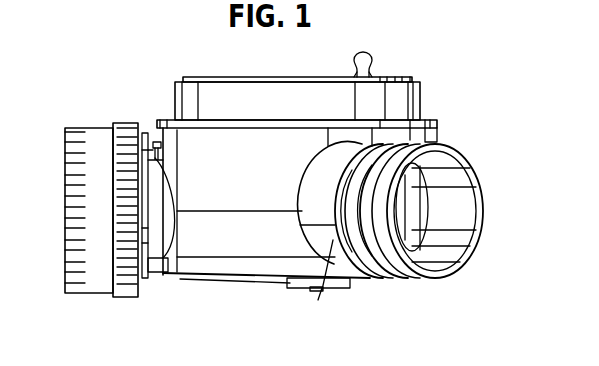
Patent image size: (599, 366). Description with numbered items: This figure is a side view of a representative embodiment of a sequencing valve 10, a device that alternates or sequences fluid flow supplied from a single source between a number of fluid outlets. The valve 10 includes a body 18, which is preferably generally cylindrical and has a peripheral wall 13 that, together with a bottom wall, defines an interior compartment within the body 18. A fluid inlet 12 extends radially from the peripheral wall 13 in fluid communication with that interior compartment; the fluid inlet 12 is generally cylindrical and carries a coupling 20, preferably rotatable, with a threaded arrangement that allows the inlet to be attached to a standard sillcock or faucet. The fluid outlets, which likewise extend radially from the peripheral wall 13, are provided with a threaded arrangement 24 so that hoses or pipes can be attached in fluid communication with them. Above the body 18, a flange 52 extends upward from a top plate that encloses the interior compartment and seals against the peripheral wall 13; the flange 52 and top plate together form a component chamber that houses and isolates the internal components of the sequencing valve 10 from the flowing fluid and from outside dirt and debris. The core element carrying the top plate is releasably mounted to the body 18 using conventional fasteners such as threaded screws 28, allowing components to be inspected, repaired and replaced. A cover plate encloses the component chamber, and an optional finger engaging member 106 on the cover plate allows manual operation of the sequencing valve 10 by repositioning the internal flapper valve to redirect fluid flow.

The sequencing valve 10 is at (422, 44).
The fluid inlet 12 is at (157, 139).
The peripheral wall 13 is at (245, 241).
The body 18 is at (345, 141).
The coupling 20 is at (93, 281).
The threaded arrangement 24 is at (410, 284).
The threaded screws 28 is at (307, 290).
The flange 52 is at (224, 96).
The finger engaging member 106 is at (377, 52).